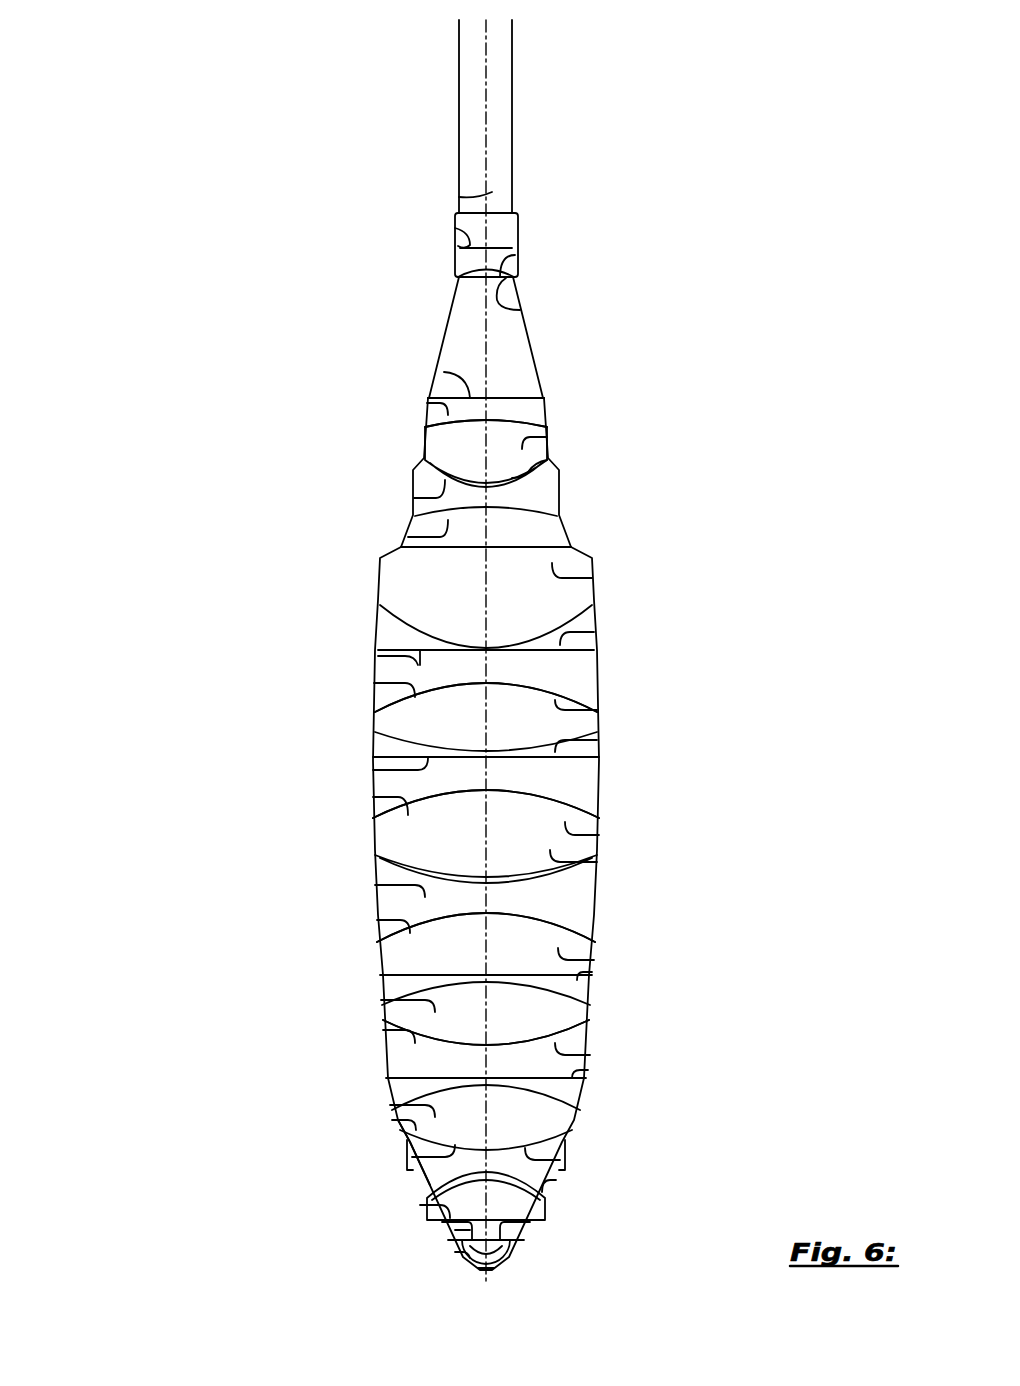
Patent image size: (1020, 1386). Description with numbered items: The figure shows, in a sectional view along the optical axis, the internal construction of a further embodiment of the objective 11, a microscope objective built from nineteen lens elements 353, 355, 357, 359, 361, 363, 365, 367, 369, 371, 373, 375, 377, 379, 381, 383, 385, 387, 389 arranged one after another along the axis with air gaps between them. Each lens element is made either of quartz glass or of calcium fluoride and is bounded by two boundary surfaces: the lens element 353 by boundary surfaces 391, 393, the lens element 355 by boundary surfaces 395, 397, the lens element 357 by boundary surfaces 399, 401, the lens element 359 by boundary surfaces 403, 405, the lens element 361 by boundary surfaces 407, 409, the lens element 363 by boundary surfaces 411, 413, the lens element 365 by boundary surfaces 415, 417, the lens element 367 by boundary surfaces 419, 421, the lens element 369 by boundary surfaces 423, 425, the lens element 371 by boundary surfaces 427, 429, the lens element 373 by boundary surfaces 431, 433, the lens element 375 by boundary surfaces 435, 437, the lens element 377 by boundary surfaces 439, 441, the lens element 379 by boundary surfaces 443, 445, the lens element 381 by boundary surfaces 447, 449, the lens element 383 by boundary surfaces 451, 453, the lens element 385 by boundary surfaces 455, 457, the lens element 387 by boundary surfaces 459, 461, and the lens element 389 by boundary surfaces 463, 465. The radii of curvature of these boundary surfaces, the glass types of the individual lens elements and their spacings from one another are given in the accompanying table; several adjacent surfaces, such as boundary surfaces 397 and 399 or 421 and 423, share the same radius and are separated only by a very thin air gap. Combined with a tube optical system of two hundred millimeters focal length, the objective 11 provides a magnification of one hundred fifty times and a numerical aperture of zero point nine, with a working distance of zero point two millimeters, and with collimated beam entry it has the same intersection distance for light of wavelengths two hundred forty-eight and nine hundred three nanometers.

The objective 11 is at (166, 364).
The lens element 353 is at (495, 1245).
The lens element 355 is at (470, 1235).
The lens element 357 is at (505, 1210).
The lens element 359 is at (420, 1160).
The lens element 361 is at (540, 1112).
The lens element 363 is at (432, 1065).
The lens element 365 is at (525, 1025).
The lens element 367 is at (465, 945).
The lens element 369 is at (548, 905).
The lens element 371 is at (437, 830).
The lens element 373 is at (553, 780).
The lens element 375 is at (438, 712).
The lens element 377 is at (560, 668).
The lens element 379 is at (445, 597).
The lens element 381 is at (540, 500).
The lens element 383 is at (465, 437).
The lens element 385 is at (530, 403).
The lens element 387 is at (470, 262).
The lens element 389 is at (500, 230).
The boundary surface 391 is at (478, 1268).
The boundary surface 393 is at (460, 1252).
The boundary surface 395 is at (525, 1232).
The boundary surface 397 is at (440, 1222).
The boundary surface 399 is at (445, 1205).
The boundary surface 401 is at (550, 1180).
The boundary surface 403 is at (530, 1160).
The boundary surface 405 is at (452, 1157).
The boundary surface 407 is at (410, 1118).
The boundary surface 409 is at (430, 1107).
The boundary surface 411 is at (580, 1070).
The boundary surface 413 is at (560, 1055).
The boundary surface 415 is at (408, 1030).
The boundary surface 417 is at (432, 1000).
The boundary surface 419 is at (590, 970).
The boundary surface 421 is at (565, 960).
The boundary surface 423 is at (405, 920).
The boundary surface 425 is at (420, 885).
The boundary surface 427 is at (550, 860).
The boundary surface 429 is at (580, 835).
The boundary surface 431 is at (398, 797).
The boundary surface 433 is at (373, 770).
The boundary surface 435 is at (560, 740).
The boundary surface 437 is at (555, 710).
The boundary surface 439 is at (405, 683).
The boundary surface 441 is at (420, 660).
The boundary surface 443 is at (590, 632).
The boundary surface 445 is at (550, 578).
The boundary surface 447 is at (440, 537).
The boundary surface 449 is at (445, 497).
The boundary surface 451 is at (547, 460).
The boundary surface 453 is at (550, 440).
The boundary surface 455 is at (425, 405).
The boundary surface 457 is at (444, 372).
The boundary surface 459 is at (520, 310).
The boundary surface 461 is at (500, 262).
The boundary surface 463 is at (462, 240).
The boundary surface 465 is at (492, 197).